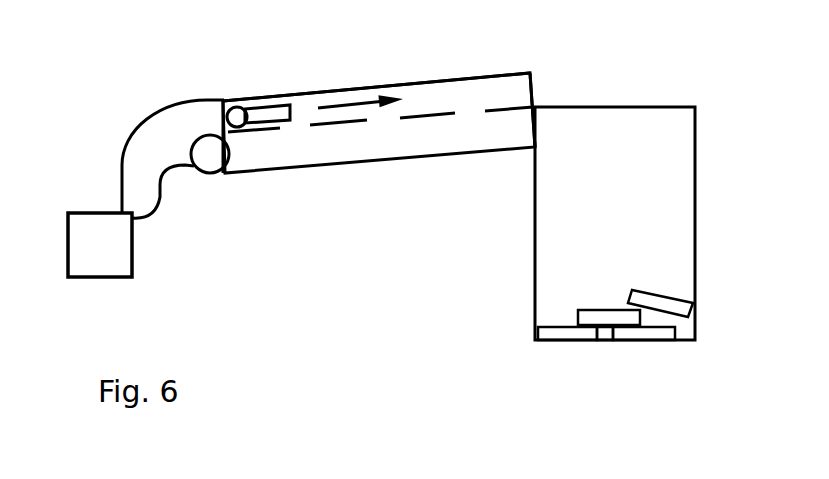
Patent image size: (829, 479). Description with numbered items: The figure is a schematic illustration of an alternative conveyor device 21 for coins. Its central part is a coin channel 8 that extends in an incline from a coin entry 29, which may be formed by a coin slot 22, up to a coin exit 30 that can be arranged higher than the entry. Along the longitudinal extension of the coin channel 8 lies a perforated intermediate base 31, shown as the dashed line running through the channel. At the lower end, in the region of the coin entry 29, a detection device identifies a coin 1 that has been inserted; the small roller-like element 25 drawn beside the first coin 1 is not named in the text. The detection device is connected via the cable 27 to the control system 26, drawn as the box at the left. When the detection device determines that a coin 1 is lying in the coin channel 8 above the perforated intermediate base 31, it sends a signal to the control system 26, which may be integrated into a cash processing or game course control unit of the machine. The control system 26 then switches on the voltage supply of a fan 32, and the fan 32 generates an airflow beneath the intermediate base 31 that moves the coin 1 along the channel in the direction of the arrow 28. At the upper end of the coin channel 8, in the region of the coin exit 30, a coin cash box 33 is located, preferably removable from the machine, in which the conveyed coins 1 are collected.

The coin 1 is at (281, 104).
The coin channel 8 is at (462, 78).
The conveyor device 21 is at (331, 196).
The coin slot 22 is at (215, 109).
The deflection roller 25 is at (232, 108).
The control system 26 is at (100, 245).
The cable 27 is at (128, 133).
The arrow 28 is at (380, 98).
The coin entry 29 is at (221, 99).
The coin exit 30 is at (537, 79).
The perforated intermediate base 31 is at (438, 118).
The fan 32 is at (215, 173).
The coin cash box 33 is at (624, 104).